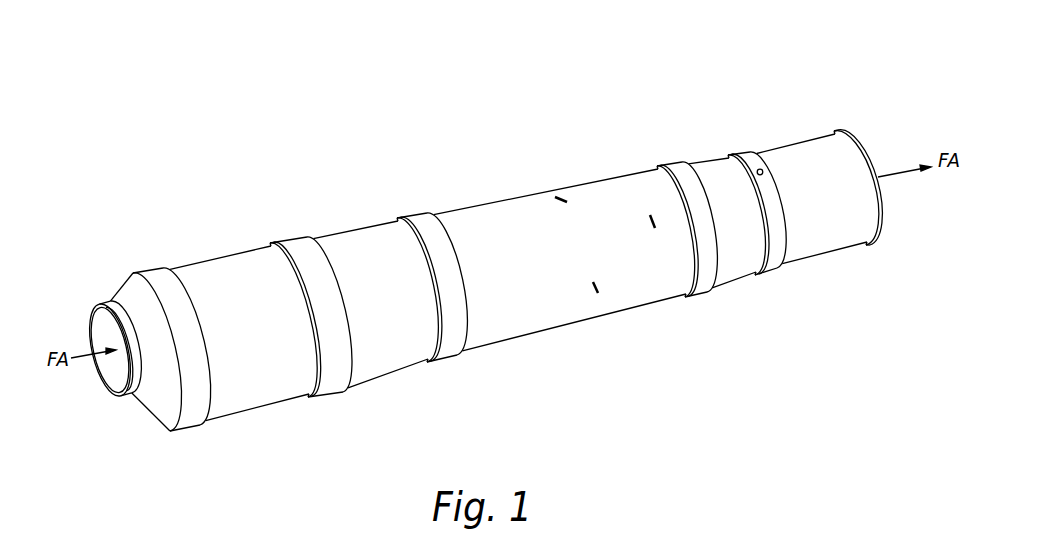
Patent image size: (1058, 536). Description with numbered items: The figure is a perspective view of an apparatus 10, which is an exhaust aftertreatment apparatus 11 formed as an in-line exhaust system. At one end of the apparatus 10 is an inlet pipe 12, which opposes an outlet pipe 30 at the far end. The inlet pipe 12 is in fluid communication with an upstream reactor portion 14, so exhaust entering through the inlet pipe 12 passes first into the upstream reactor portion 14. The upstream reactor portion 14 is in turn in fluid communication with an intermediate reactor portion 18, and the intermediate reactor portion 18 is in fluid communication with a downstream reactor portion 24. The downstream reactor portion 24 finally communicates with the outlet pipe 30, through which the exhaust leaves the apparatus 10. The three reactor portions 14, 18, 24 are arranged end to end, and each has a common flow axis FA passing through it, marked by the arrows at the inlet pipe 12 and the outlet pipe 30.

The apparatus 10 is at (288, 108).
The exhaust aftertreatment apparatus 11 is at (481, 276).
The inlet pipe 12 is at (113, 368).
The upstream reactor portion 14 is at (247, 383).
The intermediate reactor portion 18 is at (528, 312).
The downstream reactor portion 24 is at (820, 233).
The outlet pipe 30 is at (863, 148).